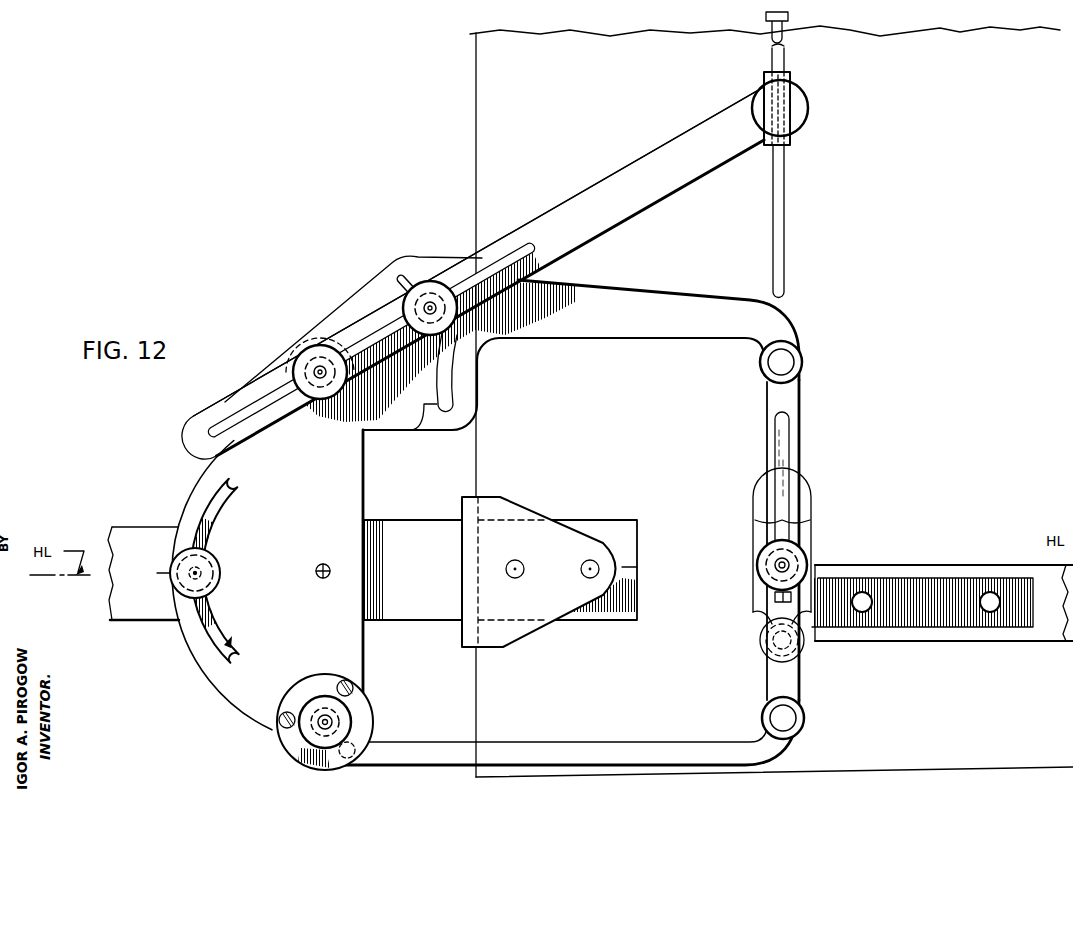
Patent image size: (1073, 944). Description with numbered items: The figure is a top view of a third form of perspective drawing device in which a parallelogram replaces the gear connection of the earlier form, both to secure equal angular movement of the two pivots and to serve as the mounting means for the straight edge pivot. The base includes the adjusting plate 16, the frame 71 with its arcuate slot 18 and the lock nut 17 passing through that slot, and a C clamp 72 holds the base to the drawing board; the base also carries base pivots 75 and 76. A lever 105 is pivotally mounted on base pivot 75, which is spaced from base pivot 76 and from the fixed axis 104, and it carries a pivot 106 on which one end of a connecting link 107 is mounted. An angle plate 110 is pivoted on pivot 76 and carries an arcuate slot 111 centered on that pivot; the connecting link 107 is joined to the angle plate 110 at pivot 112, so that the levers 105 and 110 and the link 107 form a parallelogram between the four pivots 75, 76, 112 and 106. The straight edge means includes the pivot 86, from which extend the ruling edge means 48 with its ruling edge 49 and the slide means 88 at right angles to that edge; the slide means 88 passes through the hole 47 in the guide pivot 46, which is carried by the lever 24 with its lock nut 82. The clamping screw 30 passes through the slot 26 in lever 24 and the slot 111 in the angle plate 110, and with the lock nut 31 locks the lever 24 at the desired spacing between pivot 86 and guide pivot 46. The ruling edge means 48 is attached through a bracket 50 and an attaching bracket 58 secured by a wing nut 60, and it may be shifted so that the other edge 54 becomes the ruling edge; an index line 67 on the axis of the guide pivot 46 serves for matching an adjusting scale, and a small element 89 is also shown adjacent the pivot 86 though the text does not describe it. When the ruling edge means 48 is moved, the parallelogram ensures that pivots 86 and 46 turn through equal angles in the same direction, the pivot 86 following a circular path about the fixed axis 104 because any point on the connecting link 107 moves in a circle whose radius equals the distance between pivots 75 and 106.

The adjusting plate 16 is at (140, 608).
The lock nut 17 is at (193, 588).
The arcuate slot 18 is at (226, 645).
The lever 24 is at (563, 224).
The slot 26 is at (262, 407).
The clamping screw 30 is at (432, 302).
The lock nut 31 is at (406, 293).
The guide pivot 46 is at (800, 115).
The hole 47 is at (788, 80).
The ruling edge means 48 is at (1050, 608).
The ruling edge 49 is at (984, 560).
The bracket 50 is at (764, 620).
The other edge 54 is at (982, 648).
The attaching bracket 58 is at (875, 617).
The wing nut 60 is at (776, 649).
The index line 67 is at (778, 107).
The frame 71 is at (206, 479).
The C clamp 72 is at (487, 634).
The base pivot 75 is at (316, 738).
The base pivot 76 is at (297, 356).
The lock nut 82 is at (321, 355).
The pivot 86 is at (760, 564).
The slide means 88 is at (781, 248).
The clip 89 is at (773, 597).
The fixed axis 104 is at (328, 563).
The lever 105 is at (606, 755).
The pivot 106 is at (795, 719).
The connecting link 107 is at (784, 397).
The angle plate 110 is at (628, 303).
The arcuate slot 111 is at (413, 412).
The pivot 112 is at (788, 361).